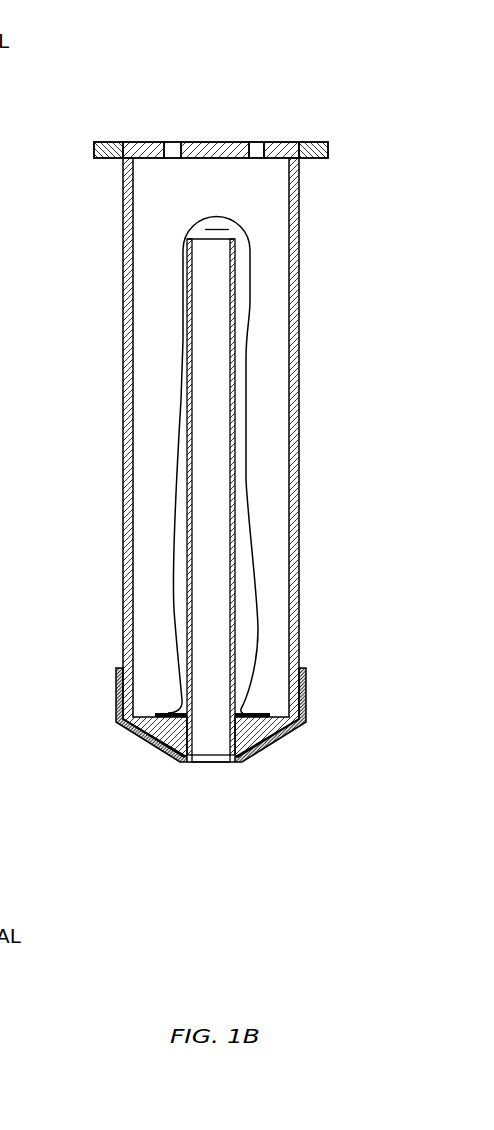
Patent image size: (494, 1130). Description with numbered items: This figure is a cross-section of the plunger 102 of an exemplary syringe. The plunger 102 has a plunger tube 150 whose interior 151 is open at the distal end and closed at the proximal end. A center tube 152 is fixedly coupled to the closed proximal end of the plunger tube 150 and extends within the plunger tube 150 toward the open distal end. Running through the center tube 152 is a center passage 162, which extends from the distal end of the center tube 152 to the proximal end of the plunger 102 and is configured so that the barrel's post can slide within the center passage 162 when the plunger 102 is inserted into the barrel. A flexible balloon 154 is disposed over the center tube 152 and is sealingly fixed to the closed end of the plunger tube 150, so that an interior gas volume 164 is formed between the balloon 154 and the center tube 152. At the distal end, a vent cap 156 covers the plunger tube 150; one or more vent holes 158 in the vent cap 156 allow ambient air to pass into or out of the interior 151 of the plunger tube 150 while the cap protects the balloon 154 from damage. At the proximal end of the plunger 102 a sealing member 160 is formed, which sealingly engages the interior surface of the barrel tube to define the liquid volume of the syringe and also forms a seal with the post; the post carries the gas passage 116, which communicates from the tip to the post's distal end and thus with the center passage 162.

The plunger 102 is at (199, 48).
The gas passage 116 is at (294, 730).
The plunger tube 150 is at (124, 242).
The interior 151 is at (153, 208).
The center tube 152 is at (189, 463).
The flexible balloon 154 is at (177, 502).
The vent cap 156 is at (216, 143).
The vent holes 158 is at (260, 136).
The sealing member 160 is at (148, 741).
The center passage 162 is at (206, 372).
The interior gas volume 164 is at (243, 325).